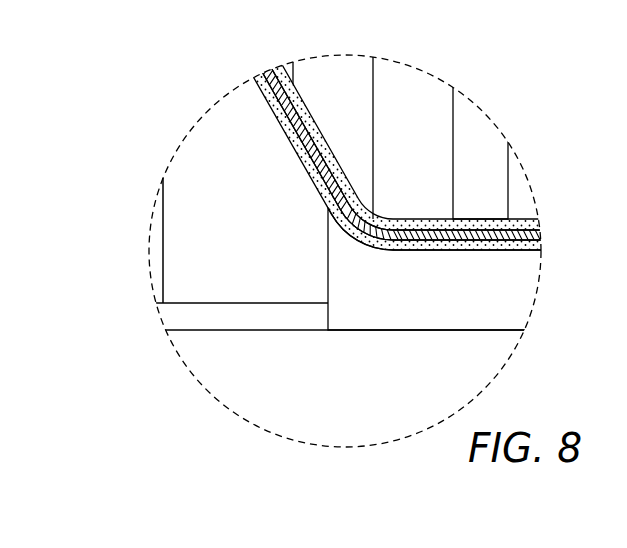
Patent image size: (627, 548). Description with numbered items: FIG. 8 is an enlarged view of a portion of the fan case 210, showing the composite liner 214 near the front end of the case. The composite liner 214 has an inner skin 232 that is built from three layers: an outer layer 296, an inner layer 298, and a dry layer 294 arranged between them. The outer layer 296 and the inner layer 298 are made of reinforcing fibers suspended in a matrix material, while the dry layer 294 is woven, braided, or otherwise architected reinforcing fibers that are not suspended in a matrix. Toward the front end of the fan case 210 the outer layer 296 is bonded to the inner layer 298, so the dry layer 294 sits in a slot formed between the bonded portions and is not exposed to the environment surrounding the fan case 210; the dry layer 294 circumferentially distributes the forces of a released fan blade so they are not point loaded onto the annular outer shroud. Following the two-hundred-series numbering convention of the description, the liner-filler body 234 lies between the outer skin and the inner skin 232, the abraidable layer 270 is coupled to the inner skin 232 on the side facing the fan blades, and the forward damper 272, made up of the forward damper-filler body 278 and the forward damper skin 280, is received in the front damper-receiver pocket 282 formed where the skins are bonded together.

The fan case 210 is at (480, 70).
The composite liner 214 is at (405, 110).
The inner skin 232 is at (416, 162).
The liner-filler body 234 is at (494, 140).
The abraidable layer 270 is at (383, 322).
The forward damper 272 is at (340, 302).
The forward damper-filler body 278 is at (158, 250).
The forward damper skin 280 is at (226, 320).
The front damper-receiver pocket 282 is at (206, 157).
The dry layer 294 is at (536, 236).
The outer layer 296 is at (460, 219).
The inner layer 298 is at (510, 253).